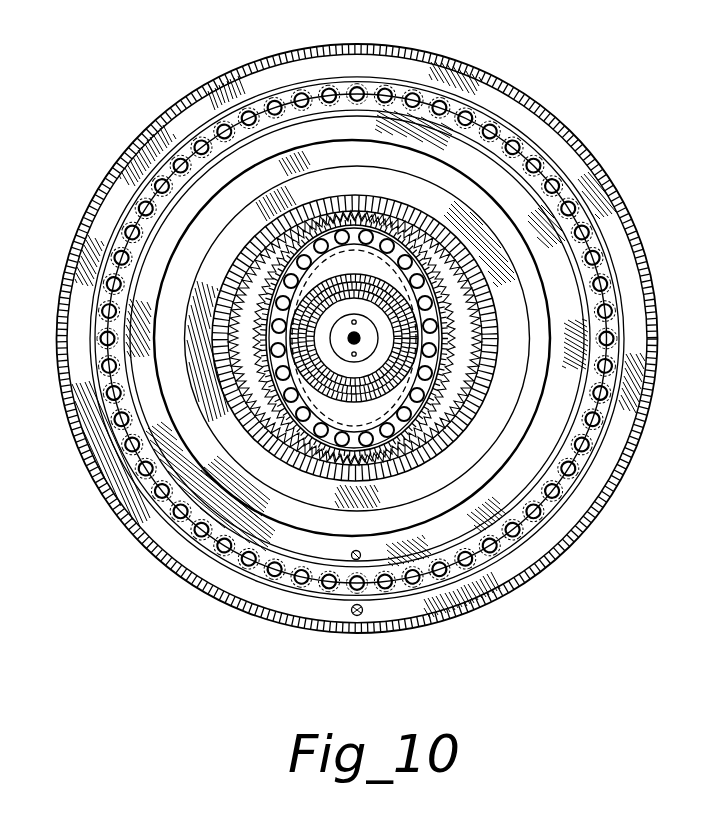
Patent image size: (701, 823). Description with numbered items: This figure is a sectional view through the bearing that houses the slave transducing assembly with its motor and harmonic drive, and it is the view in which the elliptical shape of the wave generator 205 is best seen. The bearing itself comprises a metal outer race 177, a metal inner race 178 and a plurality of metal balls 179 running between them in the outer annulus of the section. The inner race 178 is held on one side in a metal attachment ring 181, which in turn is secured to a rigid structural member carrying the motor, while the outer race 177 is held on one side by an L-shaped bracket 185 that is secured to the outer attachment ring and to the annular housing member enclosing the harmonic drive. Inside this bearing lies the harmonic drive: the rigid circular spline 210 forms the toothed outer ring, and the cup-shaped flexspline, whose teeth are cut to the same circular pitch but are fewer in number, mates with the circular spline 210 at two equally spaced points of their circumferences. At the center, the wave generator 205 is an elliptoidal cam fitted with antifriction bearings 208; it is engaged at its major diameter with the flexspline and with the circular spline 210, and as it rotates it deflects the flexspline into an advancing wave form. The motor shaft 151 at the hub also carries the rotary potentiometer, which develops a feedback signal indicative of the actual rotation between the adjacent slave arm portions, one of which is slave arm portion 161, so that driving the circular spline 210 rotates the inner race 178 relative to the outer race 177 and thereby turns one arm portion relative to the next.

The motor shaft 151 is at (340, 286).
The slave arm portion 161 is at (217, 76).
The outer race 177 is at (310, 84).
The inner race 178 is at (403, 97).
The balls 179 is at (356, 92).
The attachment ring 181 is at (477, 153).
The L-shaped bracket 185 is at (180, 127).
The wave generator 205 is at (375, 427).
The antifriction bearings 208 is at (368, 447).
The circular spline 210 is at (346, 203).